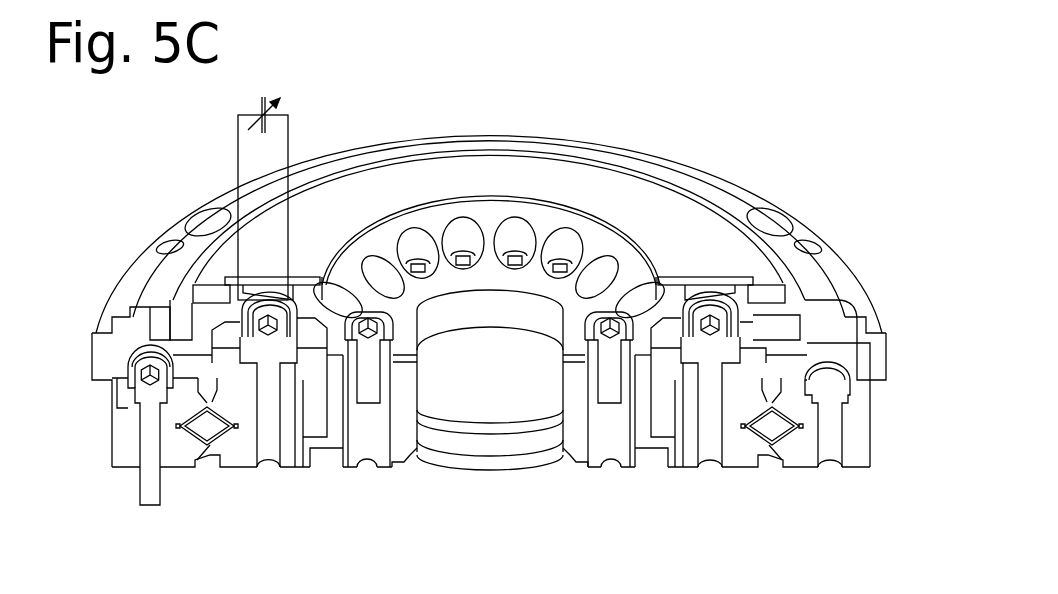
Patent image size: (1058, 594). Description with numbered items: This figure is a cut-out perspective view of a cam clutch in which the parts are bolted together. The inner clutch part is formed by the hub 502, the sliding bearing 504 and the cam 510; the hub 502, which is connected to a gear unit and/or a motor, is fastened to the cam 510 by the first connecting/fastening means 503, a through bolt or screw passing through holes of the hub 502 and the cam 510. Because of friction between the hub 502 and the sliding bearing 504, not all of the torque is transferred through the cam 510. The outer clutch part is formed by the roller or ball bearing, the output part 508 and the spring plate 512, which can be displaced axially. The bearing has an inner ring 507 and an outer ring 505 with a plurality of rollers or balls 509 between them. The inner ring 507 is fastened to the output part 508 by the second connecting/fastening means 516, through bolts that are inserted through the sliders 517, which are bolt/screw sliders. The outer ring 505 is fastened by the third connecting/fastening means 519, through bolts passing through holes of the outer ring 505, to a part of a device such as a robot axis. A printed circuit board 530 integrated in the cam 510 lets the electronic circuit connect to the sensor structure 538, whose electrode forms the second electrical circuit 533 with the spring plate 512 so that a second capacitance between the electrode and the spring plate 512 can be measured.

The hub 502 is at (332, 458).
The first connecting/fastening means 503 is at (368, 393).
The sliding bearing 504 is at (657, 440).
The outer ring of the bearing 505 is at (122, 458).
The inner ring of the bearing 507 is at (235, 453).
The output part 508 is at (142, 297).
The rollers or balls 509 is at (777, 425).
The cam 510 is at (768, 258).
The spring plate 512 is at (181, 297).
The second connecting/fastening means 516 is at (267, 417).
The sliders 517 is at (728, 355).
The third connecting/fastening means 519 is at (150, 452).
The printed circuit board 530 is at (687, 228).
The second electrical circuit 533 is at (237, 175).
The sensor structure 538 is at (307, 277).